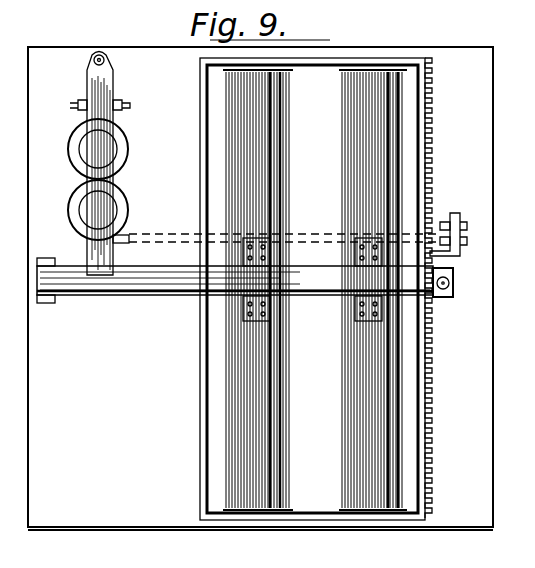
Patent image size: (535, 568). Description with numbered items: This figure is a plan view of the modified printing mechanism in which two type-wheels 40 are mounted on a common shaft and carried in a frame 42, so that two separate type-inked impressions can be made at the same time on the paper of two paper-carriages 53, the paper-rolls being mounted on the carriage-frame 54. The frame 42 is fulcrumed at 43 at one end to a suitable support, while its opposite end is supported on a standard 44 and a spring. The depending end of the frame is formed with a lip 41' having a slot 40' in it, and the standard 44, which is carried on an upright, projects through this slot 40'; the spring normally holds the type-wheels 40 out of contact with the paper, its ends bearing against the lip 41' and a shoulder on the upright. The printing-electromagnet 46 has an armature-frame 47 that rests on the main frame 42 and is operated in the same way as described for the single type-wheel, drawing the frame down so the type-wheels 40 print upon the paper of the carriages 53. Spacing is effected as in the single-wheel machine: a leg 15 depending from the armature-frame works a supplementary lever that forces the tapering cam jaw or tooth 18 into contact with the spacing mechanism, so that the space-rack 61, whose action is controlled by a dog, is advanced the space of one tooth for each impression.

The leg 15 is at (130, 240).
The tapering cam jaw or tooth 18 is at (169, 235).
The type-wheel 40 is at (312, 282).
The slot 40' is at (462, 297).
The lip 41' is at (457, 242).
The frame 42 is at (152, 290).
The fulcrum 43 is at (55, 302).
The standard 44 is at (453, 283).
The printing-electromagnet 46 is at (85, 196).
The armature-frame 47 is at (113, 196).
The paper-carriage 53 is at (346, 408).
The carriage-frame 54 is at (260, 541).
The space-rack 61 is at (447, 288).